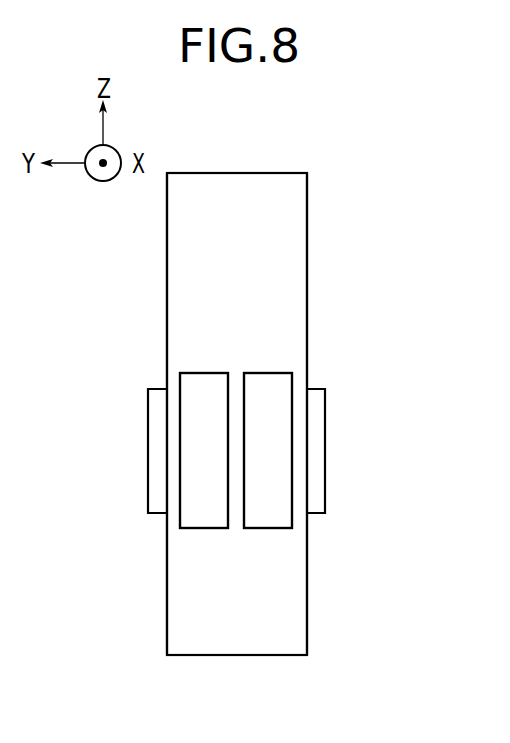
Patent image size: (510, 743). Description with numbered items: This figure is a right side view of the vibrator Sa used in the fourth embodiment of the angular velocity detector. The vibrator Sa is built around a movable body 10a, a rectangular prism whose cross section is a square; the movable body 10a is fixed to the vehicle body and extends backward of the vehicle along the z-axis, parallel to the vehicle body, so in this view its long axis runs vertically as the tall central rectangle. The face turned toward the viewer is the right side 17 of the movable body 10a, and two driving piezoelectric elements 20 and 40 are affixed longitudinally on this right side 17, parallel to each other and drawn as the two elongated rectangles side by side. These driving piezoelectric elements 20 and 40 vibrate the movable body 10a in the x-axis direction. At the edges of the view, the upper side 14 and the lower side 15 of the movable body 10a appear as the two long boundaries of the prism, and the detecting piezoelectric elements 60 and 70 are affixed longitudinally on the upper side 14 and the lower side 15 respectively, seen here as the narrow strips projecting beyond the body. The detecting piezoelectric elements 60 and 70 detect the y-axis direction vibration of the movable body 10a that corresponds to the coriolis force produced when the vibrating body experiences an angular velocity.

The movable body 10a is at (322, 652).
The vibrator Sa is at (321, 186).
The upper side 14 is at (307, 262).
The lower side 15 is at (167, 263).
The right side 17 is at (230, 638).
The driving piezoelectric element 20 is at (268, 520).
The driving piezoelectric element 40 is at (203, 520).
The detecting piezoelectric element 60 is at (325, 448).
The detecting piezoelectric element 70 is at (148, 449).